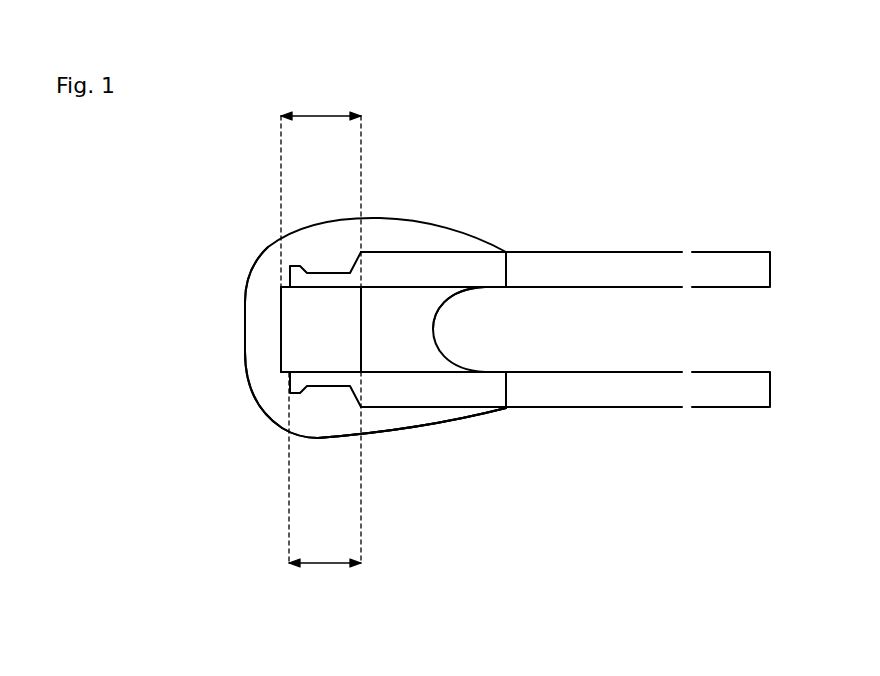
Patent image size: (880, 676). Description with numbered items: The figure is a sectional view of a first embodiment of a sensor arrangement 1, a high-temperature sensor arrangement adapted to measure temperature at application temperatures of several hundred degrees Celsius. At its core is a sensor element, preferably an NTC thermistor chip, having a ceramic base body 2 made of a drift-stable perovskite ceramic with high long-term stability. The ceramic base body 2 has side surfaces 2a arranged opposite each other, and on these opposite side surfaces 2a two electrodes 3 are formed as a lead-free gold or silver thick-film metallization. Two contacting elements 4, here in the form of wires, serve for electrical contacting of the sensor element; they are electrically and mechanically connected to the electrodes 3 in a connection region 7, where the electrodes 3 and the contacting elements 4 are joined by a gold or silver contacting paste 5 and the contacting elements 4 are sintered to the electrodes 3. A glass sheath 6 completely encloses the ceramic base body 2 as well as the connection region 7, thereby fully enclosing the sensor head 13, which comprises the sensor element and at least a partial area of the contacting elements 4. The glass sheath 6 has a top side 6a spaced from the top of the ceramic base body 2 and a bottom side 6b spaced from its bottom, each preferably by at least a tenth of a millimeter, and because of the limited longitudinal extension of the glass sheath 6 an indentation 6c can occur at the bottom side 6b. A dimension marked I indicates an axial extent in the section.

The sensor arrangement 1 is at (196, 347).
The ceramic base body 2 is at (290, 327).
The side surfaces 2a is at (320, 286).
The electrodes 3 is at (281, 287).
The contacting elements 4 is at (609, 260).
The contacting paste 5 is at (328, 268).
The glass sheath 6 is at (316, 438).
The top side of the glass sheath 6a is at (226, 363).
The bottom side of the glass sheath 6b is at (486, 359).
The indentation 6c is at (455, 317).
The connection region 7 is at (320, 563).
The sensor head 13 is at (440, 430).
The axial section length I is at (323, 108).